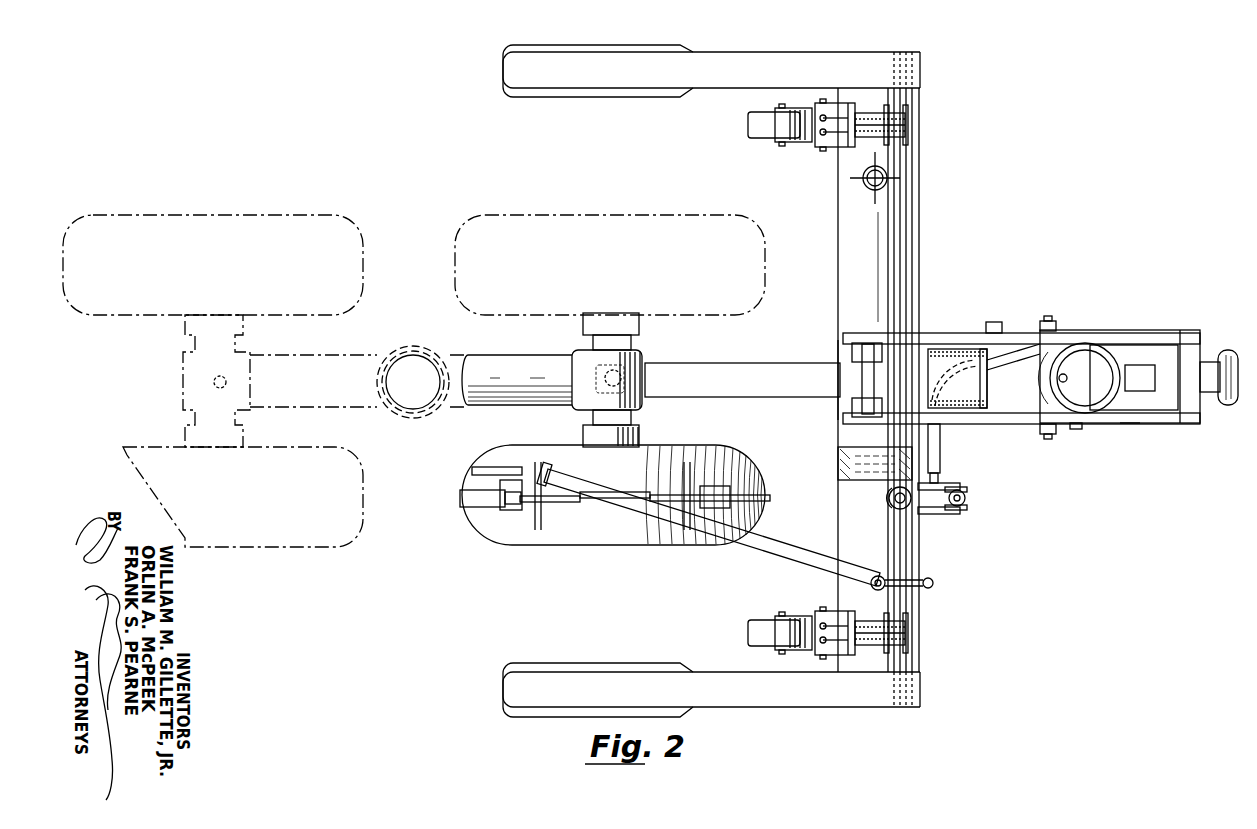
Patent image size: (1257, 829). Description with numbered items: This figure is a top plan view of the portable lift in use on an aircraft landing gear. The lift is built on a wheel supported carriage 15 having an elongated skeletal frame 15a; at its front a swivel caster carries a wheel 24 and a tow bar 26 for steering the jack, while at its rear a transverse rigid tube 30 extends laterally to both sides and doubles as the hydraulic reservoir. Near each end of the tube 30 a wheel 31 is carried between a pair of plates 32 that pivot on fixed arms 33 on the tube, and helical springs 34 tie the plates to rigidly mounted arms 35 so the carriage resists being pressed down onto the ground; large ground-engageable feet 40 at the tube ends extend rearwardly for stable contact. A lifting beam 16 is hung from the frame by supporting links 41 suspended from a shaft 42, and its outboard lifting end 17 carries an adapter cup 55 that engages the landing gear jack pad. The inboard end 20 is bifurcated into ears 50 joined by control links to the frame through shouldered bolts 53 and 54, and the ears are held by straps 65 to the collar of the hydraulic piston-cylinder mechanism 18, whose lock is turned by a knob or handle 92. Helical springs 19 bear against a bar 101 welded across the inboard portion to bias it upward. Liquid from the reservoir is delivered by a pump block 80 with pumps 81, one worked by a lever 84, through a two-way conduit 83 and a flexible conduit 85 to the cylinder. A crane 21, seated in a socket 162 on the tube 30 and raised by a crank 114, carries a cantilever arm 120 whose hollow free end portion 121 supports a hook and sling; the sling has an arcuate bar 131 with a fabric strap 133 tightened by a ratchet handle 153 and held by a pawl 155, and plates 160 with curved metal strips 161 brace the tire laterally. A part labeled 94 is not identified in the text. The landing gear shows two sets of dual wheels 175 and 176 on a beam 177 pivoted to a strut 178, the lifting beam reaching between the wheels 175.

The wheel supported carriage 15 is at (945, 298).
The skeletal frame 15a is at (1125, 426).
The lifting beam 16 is at (826, 362).
The outboard lifting end 17 is at (748, 364).
The hydraulic piston-cylinder mechanism 18 is at (1097, 355).
The helical springs 19 is at (944, 350).
The inboard end 20 is at (982, 350).
The crane 21 is at (646, 532).
The wheel 24 is at (1138, 392).
The tow bar 26 is at (1228, 350).
The transverse rigid tube 30 is at (922, 238).
The wheels 31 is at (746, 127).
The plates 32 is at (790, 104).
The arms 33 is at (830, 100).
The helical springs 34 is at (884, 104).
The arms 35 is at (912, 132).
The ground-engageable feet 40 is at (505, 66).
The supporting links 41 is at (872, 343).
The bar or shaft 42 is at (862, 380).
The ears 50 is at (1050, 346).
The shouldered bolts 53 is at (1046, 316).
The shouldered bolts 54 is at (998, 333).
The adapter cup 55 is at (648, 360).
The straps 65 is at (1080, 429).
The pump block 80 is at (922, 515).
The pumps 81 is at (956, 482).
The two-way conduit 83 is at (942, 460).
The lever 84 is at (968, 489).
The flexible conduit 85 is at (995, 322).
The turning knob or handle 92 is at (1066, 381).
The pivot pin 94 is at (966, 500).
The bar 101 is at (990, 366).
The handle or crank 114 is at (935, 585).
The cantilever arm 120 is at (770, 546).
The free end portion 121 is at (595, 491).
The arcuate bar 131 is at (560, 502).
The fabric strap 133 is at (462, 500).
The ratchet handle 153 is at (495, 468).
The holding pawl 155 is at (500, 490).
The plate 160 is at (520, 505).
The curved metal strip 161 is at (536, 532).
The socket 162 is at (892, 182).
The dual wheels 175 is at (600, 216).
The dual wheels 176 is at (262, 214).
The beam 177 is at (495, 360).
The strut 178 is at (395, 350).